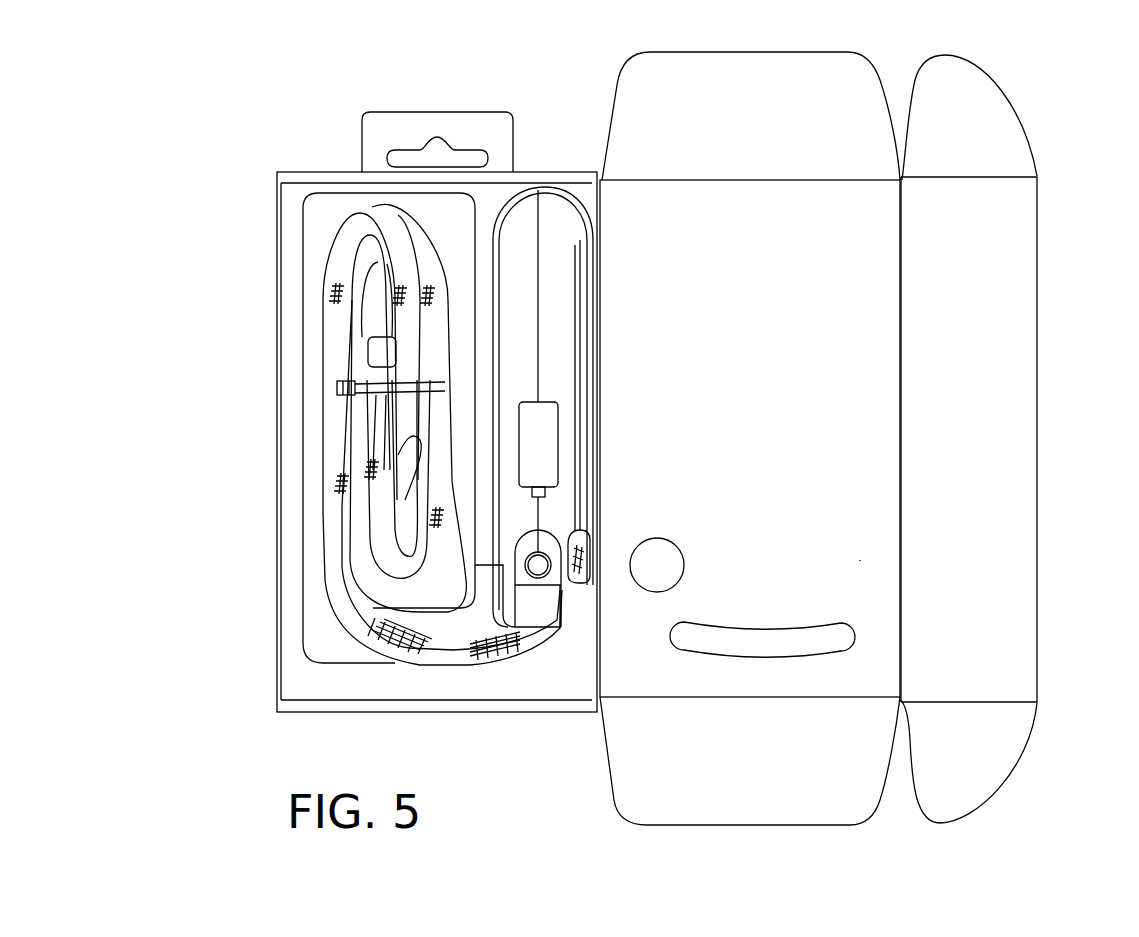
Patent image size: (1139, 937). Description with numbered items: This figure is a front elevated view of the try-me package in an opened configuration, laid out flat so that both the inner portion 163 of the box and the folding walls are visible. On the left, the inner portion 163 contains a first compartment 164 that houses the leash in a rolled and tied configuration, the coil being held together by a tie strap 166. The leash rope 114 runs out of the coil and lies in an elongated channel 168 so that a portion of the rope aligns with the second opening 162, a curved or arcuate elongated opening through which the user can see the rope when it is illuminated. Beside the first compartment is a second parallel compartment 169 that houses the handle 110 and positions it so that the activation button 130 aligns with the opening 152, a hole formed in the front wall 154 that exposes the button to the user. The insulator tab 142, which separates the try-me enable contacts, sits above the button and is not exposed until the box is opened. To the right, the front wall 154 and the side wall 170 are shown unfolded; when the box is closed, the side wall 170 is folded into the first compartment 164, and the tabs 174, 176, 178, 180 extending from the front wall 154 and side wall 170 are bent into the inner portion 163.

The handle 110 is at (563, 217).
The leash rope 114 is at (330, 303).
The activation button 130 is at (545, 553).
The insulator tab 142 is at (557, 420).
The opening 152 is at (660, 553).
The front wall 154 is at (882, 675).
The second opening 162 is at (700, 643).
The inner portion 163 is at (288, 627).
The first compartment 164 is at (318, 443).
The tie strap 166 is at (337, 382).
The elongated channel 168 is at (522, 660).
The second parallel compartment 169 is at (505, 203).
The side wall 170 is at (1027, 426).
The tab 174 is at (743, 58).
The tab 176 is at (740, 813).
The tab 178 is at (958, 67).
The tab 180 is at (955, 810).